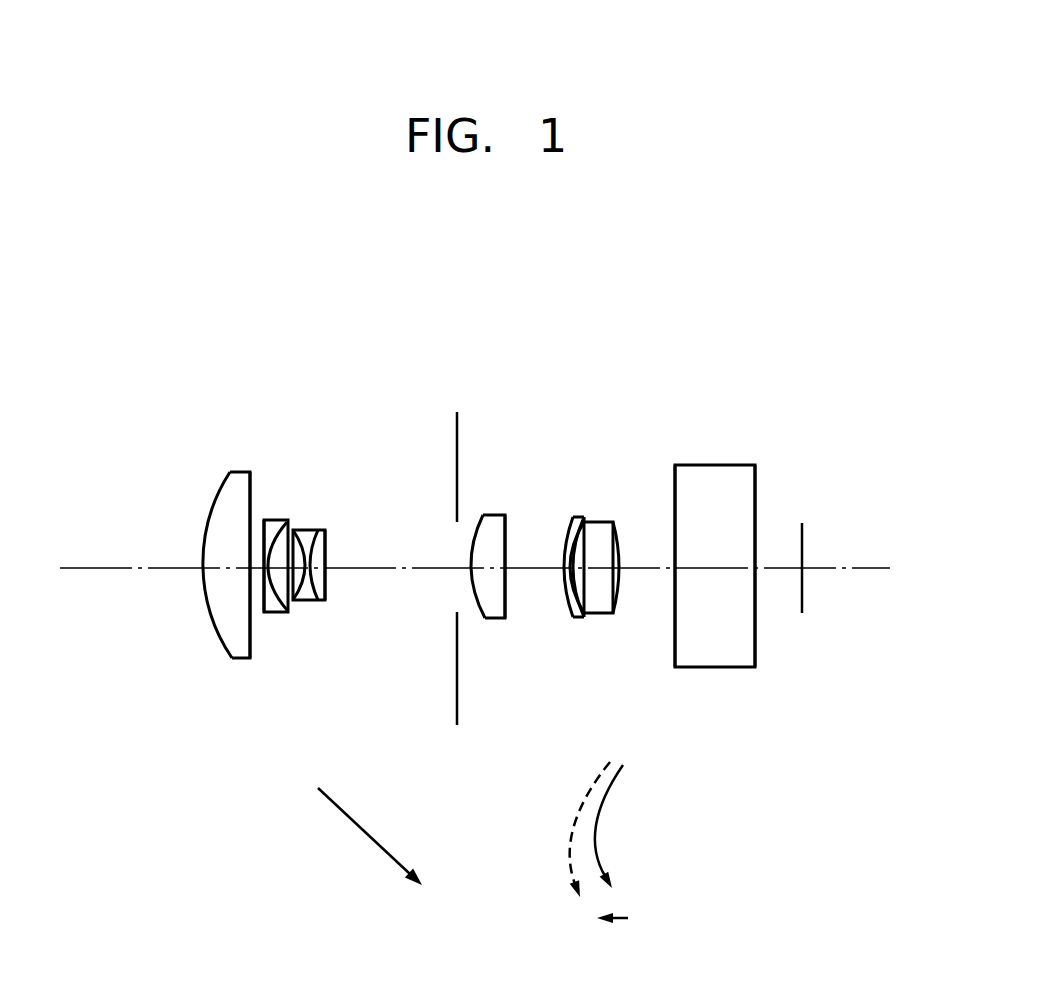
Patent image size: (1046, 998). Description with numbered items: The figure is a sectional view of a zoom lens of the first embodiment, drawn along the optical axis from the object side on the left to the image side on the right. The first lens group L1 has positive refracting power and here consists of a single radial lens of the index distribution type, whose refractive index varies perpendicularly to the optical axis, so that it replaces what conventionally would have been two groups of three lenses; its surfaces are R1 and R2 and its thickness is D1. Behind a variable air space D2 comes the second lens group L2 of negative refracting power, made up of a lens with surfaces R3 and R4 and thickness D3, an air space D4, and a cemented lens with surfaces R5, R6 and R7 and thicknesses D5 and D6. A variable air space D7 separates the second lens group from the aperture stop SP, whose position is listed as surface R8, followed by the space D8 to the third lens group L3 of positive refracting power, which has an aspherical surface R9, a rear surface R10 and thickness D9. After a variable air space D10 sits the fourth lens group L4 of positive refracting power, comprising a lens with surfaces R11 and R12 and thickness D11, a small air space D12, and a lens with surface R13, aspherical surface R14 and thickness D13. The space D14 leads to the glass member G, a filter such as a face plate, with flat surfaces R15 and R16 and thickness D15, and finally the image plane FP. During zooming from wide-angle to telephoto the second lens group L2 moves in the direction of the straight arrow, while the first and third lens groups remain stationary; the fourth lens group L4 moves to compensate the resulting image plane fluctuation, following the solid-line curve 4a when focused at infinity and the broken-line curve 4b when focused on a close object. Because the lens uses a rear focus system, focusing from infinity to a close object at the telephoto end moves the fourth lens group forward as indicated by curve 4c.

The first lens group L1 is at (163, 327).
The second lens group L2 is at (405, 327).
The third lens group L3 is at (547, 327).
The fourth lens group L4 is at (658, 327).
The glass member G is at (680, 330).
The aperture stop SP is at (450, 527).
The image plane FP is at (803, 540).
The first lens surface R1 is at (216, 493).
The second lens surface R2 is at (251, 496).
The third lens surface R3 is at (263, 532).
The fourth lens surface R4 is at (271, 540).
The fifth lens surface R5 is at (298, 546).
The sixth lens surface R6 is at (315, 548).
The seventh lens surface R7 is at (327, 548).
The stop surface R8 is at (455, 438).
The ninth lens surface R9 is at (482, 514).
The tenth lens surface R10 is at (509, 513).
The eleventh lens surface R11 is at (566, 530).
The twelfth lens surface R12 is at (581, 520).
The thirteenth lens surface R13 is at (599, 522).
The fourteenth lens surface R14 is at (620, 521).
The fifteenth surface R15 is at (675, 486).
The sixteenth surface R16 is at (755, 486).
The first lens thickness D1 is at (216, 622).
The second air space D2 is at (257, 605).
The third lens thickness D3 is at (276, 606).
The fourth air space D4 is at (296, 606).
The fifth lens thickness D5 is at (308, 604).
The sixth lens thickness D6 is at (320, 594).
The seventh air space D7 is at (402, 590).
The eighth air space D8 is at (465, 590).
The ninth lens thickness D9 is at (492, 600).
The tenth air space D10 is at (522, 598).
The eleventh lens thickness D11 is at (575, 606).
The twelfth air space D12 is at (584, 614).
The thirteenth lens thickness D13 is at (612, 606).
The fourteenth air space D14 is at (653, 571).
The fifteenth thickness D15 is at (709, 571).
The solid-line curve 4a is at (600, 842).
The broken-line curve 4b is at (568, 853).
The focusing movement curve 4c is at (620, 921).